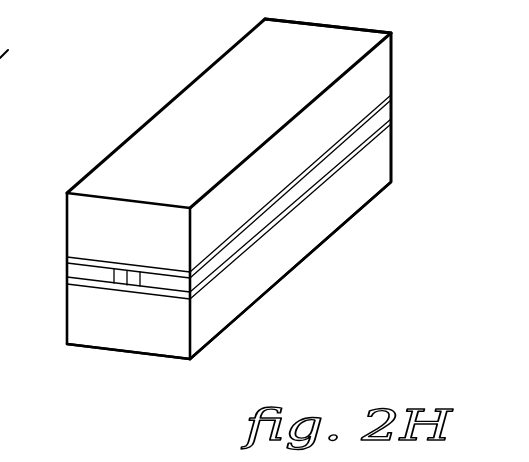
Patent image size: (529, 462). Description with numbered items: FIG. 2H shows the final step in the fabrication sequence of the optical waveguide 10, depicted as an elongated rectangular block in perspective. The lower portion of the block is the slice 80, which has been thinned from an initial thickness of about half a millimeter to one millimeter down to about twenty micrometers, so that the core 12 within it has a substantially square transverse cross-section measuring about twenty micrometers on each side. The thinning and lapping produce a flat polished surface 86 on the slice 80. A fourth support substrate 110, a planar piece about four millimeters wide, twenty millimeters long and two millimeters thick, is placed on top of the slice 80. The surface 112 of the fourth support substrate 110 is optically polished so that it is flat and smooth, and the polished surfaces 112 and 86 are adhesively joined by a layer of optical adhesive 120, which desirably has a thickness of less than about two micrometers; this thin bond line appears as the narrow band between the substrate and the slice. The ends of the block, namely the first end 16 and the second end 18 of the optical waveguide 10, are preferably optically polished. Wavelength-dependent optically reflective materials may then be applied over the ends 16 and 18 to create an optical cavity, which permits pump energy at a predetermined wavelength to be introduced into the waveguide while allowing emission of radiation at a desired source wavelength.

The optical waveguide 10 is at (182, 73).
The core 12 is at (126, 279).
The first end 16 is at (166, 344).
The second end 18 is at (391, 145).
The slice 80 is at (17, 38).
The flat polished surface 86 is at (104, 257).
The fourth support substrate 110 is at (366, 80).
The surface 112 is at (85, 256).
The layer of optical adhesive 120 is at (247, 223).